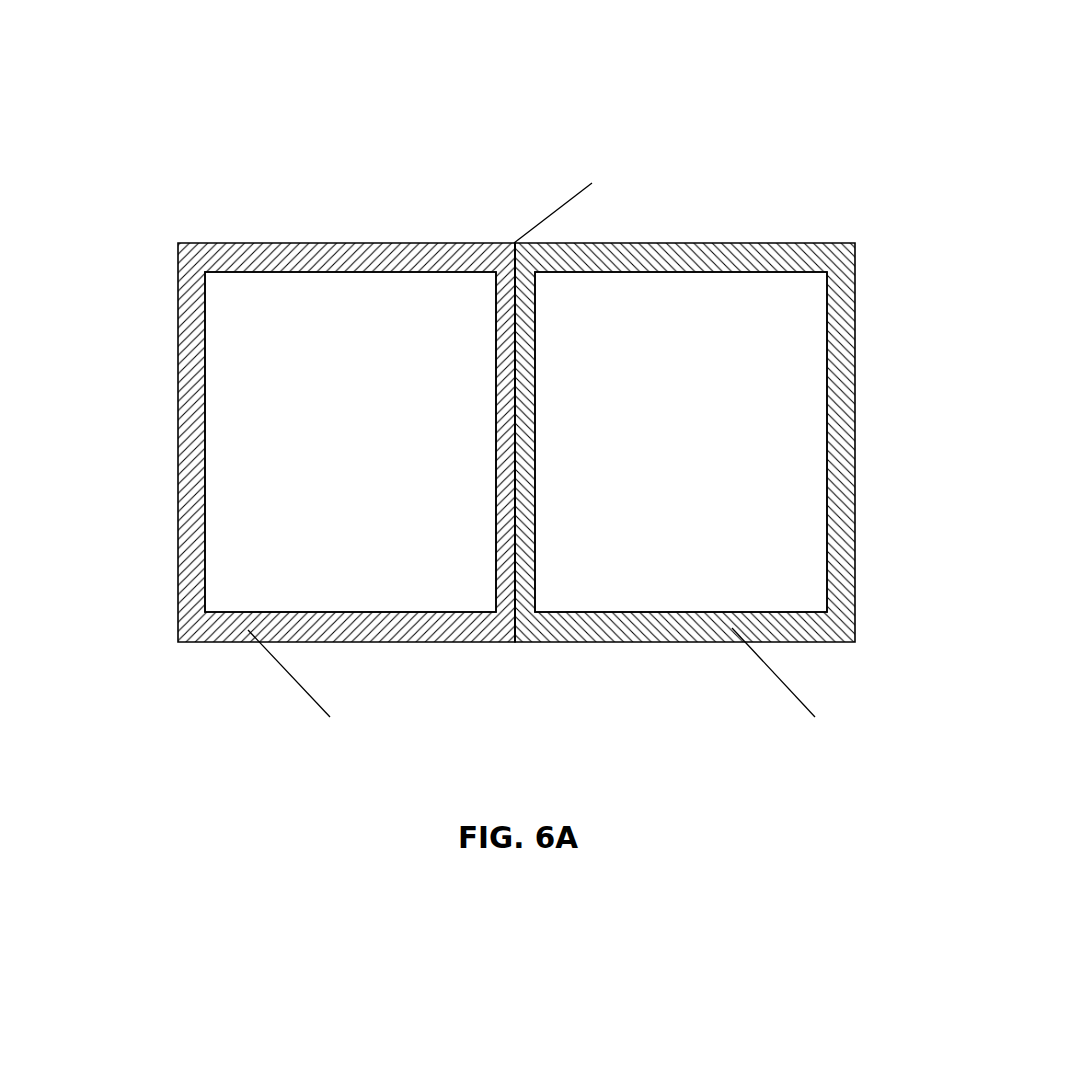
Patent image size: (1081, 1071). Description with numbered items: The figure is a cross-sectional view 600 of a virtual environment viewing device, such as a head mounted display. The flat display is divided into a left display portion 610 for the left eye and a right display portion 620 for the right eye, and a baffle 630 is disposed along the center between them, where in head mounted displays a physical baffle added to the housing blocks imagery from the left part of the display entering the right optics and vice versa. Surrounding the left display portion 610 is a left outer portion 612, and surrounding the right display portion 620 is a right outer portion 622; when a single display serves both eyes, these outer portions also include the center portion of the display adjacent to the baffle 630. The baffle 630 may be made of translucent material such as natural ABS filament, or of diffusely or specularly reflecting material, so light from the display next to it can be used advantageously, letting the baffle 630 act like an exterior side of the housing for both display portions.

The cross-sectional view 600 is at (944, 85).
The left display portion 610 is at (366, 516).
The left outer portion 612 is at (241, 249).
The right display portion 620 is at (703, 516).
The right outer portion 622 is at (857, 341).
The baffle 630 is at (515, 242).